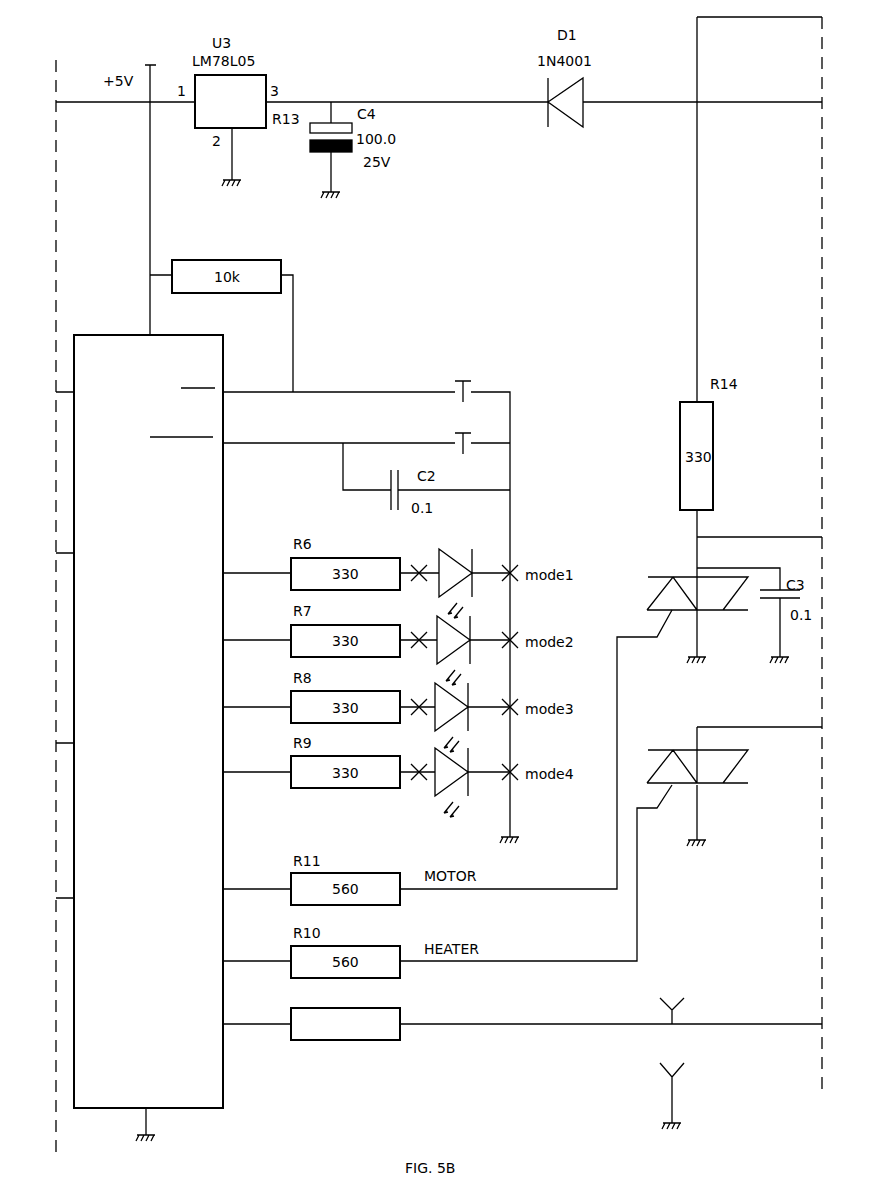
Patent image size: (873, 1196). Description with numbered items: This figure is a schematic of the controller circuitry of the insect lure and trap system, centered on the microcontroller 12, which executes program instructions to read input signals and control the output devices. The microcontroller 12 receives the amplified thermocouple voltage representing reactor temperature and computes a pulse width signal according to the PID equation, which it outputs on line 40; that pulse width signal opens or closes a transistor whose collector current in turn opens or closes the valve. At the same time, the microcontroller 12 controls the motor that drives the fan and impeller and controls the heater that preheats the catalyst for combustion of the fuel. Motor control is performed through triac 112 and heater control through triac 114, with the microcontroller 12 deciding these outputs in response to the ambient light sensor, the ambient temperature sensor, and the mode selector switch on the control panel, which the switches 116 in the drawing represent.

The microcontroller 12 is at (91, 1110).
The line 40 is at (584, 1025).
The triac 112 is at (661, 559).
The triac 114 is at (721, 885).
The mode and reset switches 116 is at (471, 349).